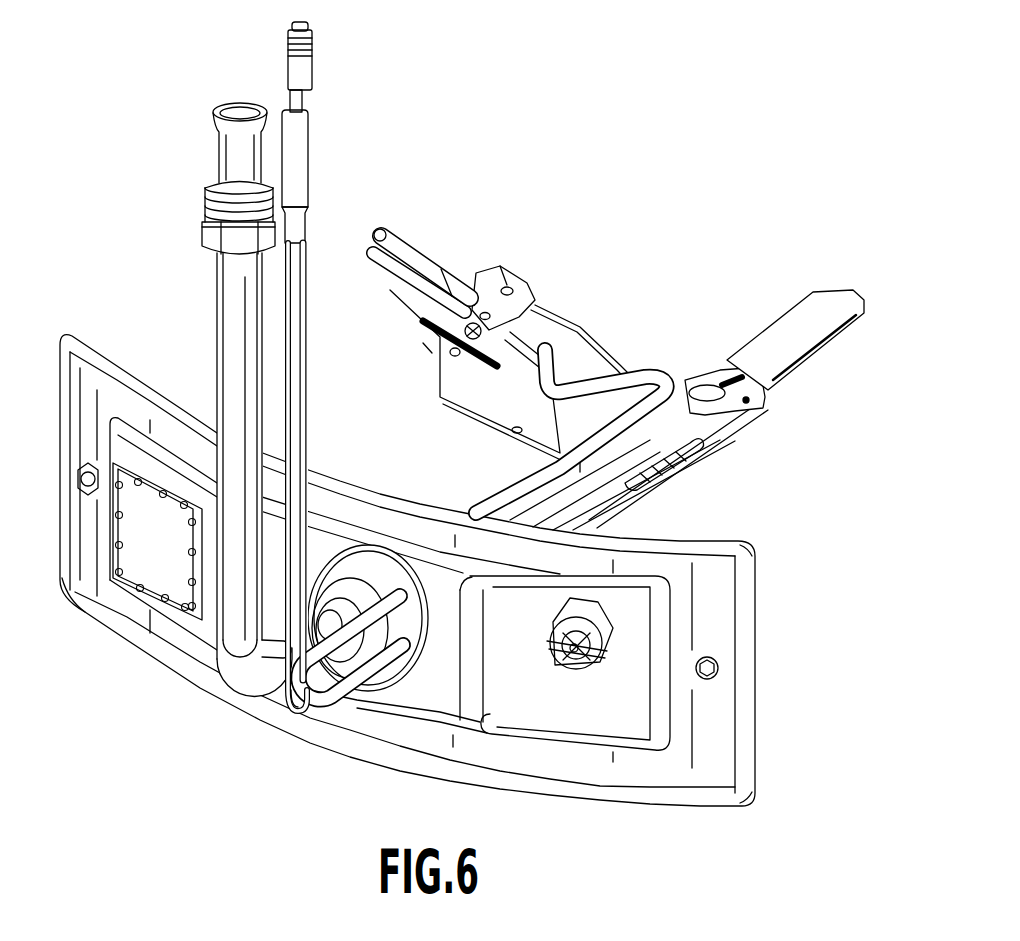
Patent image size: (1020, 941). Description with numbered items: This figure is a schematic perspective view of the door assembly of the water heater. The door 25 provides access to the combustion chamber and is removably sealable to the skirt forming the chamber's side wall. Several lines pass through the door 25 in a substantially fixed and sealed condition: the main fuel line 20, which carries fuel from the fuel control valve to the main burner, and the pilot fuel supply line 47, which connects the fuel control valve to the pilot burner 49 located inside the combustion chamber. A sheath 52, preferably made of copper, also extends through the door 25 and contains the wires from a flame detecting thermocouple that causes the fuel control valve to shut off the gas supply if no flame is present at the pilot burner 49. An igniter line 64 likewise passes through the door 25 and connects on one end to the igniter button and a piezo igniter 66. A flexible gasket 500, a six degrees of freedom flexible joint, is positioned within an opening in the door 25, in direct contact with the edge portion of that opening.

The main fuel line 20 is at (218, 302).
The door 25 is at (757, 731).
The pilot fuel supply line 47 is at (316, 433).
The pilot burner 49 is at (384, 270).
The sheath 52 is at (298, 703).
The igniter line 64 is at (323, 713).
The piezo igniter 66 is at (408, 240).
The flexible gasket 500 is at (350, 583).